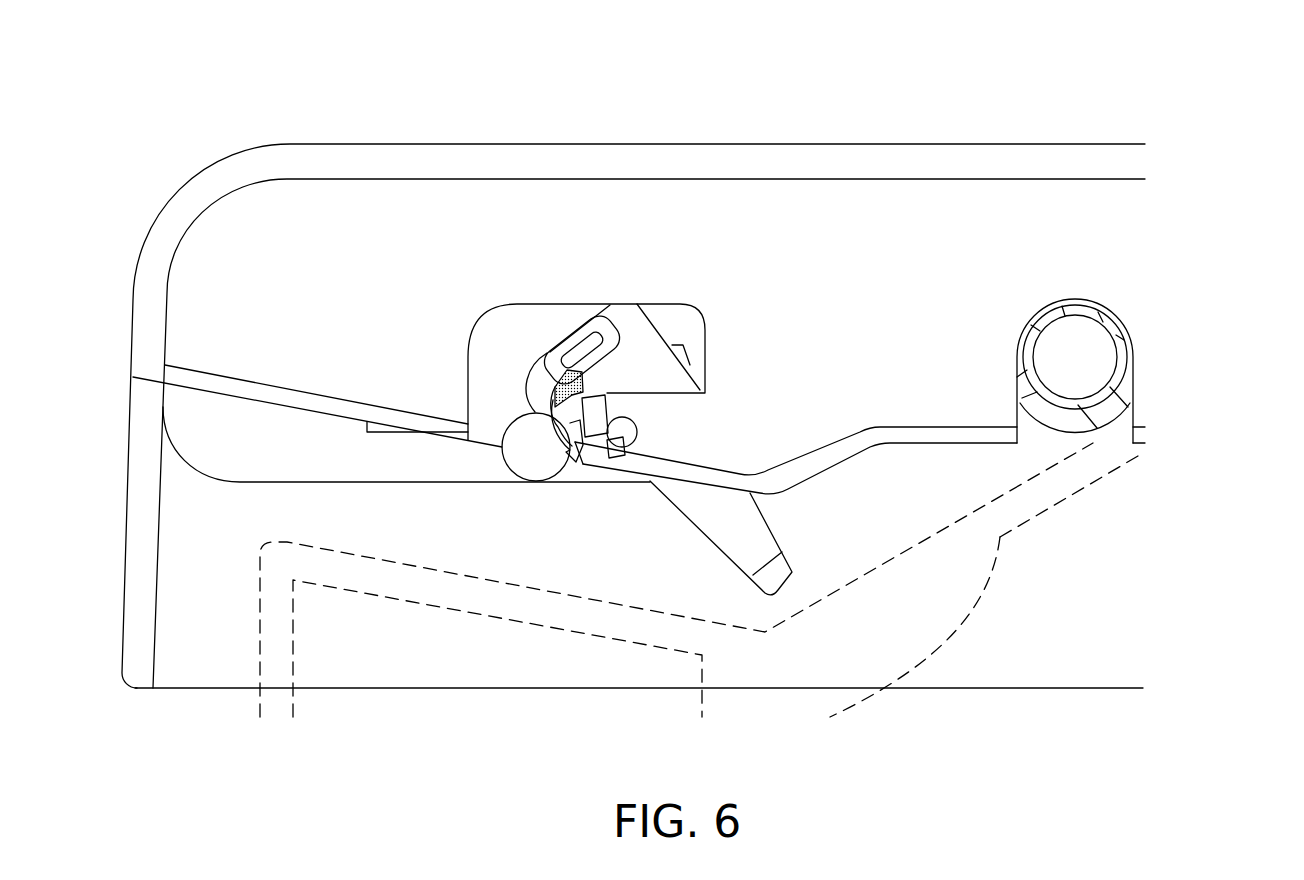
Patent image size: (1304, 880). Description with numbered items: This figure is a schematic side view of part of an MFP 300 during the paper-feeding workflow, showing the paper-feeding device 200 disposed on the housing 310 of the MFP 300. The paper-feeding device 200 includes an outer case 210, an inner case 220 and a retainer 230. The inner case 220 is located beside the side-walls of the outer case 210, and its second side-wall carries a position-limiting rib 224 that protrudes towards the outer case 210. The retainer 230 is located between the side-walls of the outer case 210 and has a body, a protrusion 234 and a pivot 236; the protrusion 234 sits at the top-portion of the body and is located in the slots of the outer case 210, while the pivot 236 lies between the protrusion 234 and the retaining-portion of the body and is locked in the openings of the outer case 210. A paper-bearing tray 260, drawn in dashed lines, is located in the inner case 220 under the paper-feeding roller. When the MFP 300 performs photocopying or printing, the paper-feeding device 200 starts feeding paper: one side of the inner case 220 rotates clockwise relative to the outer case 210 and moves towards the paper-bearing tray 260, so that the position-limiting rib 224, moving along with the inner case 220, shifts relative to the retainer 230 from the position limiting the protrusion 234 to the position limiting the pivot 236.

The paper-feeding device 200 is at (1168, 267).
The outer case 210 is at (830, 165).
The inner case 220 is at (505, 337).
The position-limiting rib 224 is at (595, 413).
The retainer 230 is at (742, 538).
The protrusion 234 is at (575, 340).
The pivot 236 is at (627, 430).
The paper-bearing tray 260 is at (453, 590).
The MFP 300 is at (1218, 747).
The housing 310 is at (1006, 665).